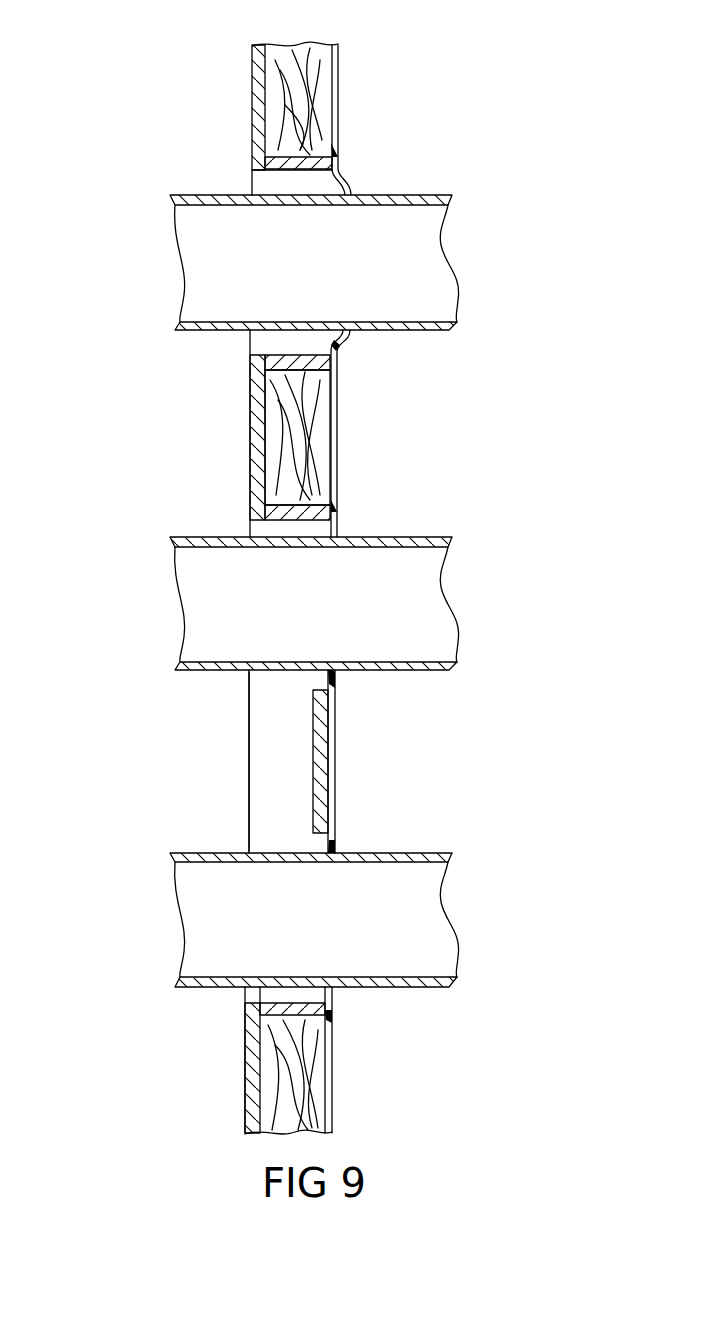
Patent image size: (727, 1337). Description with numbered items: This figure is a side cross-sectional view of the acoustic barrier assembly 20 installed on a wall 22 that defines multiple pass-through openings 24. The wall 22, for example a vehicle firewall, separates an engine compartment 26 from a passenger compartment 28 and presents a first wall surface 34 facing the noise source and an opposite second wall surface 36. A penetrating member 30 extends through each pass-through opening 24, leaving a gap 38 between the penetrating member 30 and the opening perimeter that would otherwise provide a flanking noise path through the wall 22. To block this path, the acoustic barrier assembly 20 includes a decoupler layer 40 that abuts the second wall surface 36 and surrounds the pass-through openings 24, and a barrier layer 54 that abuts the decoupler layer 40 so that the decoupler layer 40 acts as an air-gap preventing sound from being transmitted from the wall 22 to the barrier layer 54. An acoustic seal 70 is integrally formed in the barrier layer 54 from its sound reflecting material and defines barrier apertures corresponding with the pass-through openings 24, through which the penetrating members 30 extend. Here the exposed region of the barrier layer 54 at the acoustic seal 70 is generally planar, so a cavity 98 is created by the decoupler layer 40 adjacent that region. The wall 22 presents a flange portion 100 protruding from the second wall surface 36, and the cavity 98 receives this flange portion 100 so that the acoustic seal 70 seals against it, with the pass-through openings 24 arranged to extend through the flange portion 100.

The acoustic barrier assembly 20 is at (121, 170).
The wall 22 is at (262, 160).
The pass-through opening 24 is at (268, 185).
The engine compartment 26 is at (50, 613).
The passenger compartment 28 is at (546, 610).
The penetrating member 30 is at (407, 206).
The first wall surface 34 is at (241, 432).
The second wall surface 36 is at (282, 1085).
The gap 38 is at (272, 340).
The decoupler layer 40 is at (318, 52).
The barrier layer 54 is at (333, 92).
The acoustic seal 70 is at (360, 172).
The cavity 98 is at (291, 792).
The flange portion 100 is at (322, 784).